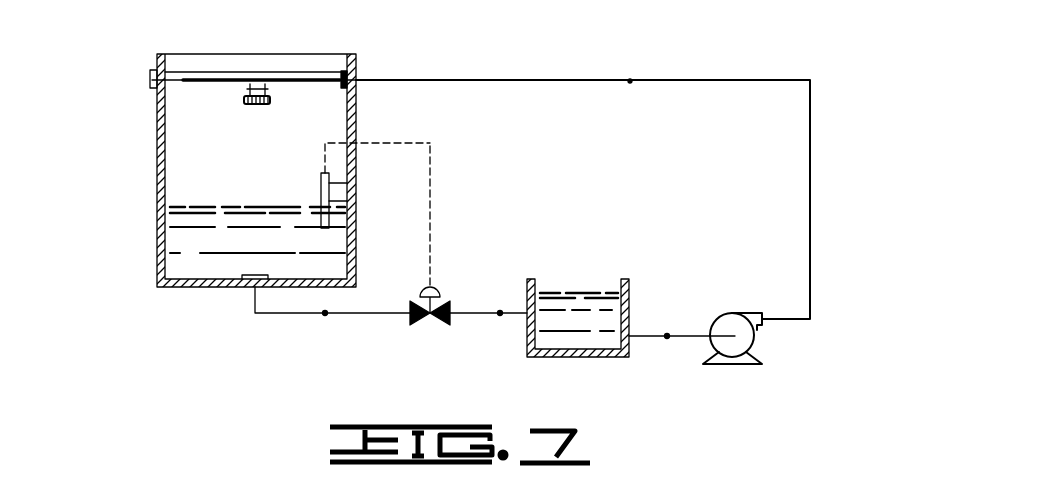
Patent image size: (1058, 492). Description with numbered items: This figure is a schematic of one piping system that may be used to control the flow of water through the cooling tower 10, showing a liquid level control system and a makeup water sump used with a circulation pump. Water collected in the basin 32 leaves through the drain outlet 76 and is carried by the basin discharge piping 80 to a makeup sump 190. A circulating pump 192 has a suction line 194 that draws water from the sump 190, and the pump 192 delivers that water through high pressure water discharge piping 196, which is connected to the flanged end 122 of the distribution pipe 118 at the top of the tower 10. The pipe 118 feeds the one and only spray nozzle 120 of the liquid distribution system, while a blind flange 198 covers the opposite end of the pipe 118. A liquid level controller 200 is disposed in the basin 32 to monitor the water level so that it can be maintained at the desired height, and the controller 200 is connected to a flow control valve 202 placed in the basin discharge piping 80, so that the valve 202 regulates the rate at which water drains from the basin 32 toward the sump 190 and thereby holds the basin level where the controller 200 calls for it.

The tower 10 is at (157, 135).
The basin 32 is at (182, 233).
The basin outlet opening 76 is at (256, 287).
The basin discharge piping 80 is at (325, 315).
The distribution pipe 118 is at (305, 78).
The spray nozzle 120 is at (262, 84).
The bolted flange 122 is at (357, 80).
The makeup sump 190 is at (598, 357).
The circulating pump 192 is at (740, 320).
The suction line 194 is at (667, 338).
The high pressure water discharge piping 196 is at (631, 80).
The blind flange 198 is at (151, 80).
The liquid level controller 200 is at (321, 185).
The flow control valve 202 is at (440, 305).